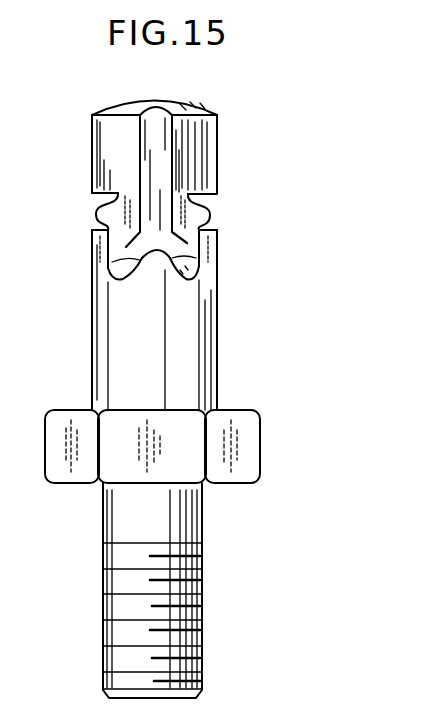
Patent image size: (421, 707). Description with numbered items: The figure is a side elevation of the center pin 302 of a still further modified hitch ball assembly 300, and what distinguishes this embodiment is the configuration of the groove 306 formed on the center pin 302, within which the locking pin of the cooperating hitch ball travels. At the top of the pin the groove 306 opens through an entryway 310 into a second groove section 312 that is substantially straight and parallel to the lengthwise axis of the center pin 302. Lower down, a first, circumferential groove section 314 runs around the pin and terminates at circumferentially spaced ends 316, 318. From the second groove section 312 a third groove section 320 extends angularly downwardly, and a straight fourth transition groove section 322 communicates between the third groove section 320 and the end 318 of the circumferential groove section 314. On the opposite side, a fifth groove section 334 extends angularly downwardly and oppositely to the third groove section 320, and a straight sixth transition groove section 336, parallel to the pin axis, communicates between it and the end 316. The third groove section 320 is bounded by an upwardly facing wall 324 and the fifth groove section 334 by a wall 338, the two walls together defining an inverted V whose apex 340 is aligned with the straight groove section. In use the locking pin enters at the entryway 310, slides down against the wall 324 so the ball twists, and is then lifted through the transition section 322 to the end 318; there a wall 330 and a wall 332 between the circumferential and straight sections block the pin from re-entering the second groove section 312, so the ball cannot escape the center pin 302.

The hitch ball assembly 300 is at (327, 272).
The center pin 302 is at (190, 371).
The groove 306 is at (157, 166).
The entryway 310 is at (161, 94).
The second groove section 312 is at (141, 141).
The first circumferential groove section 314 is at (209, 212).
The end of circumferential groove section 316 is at (207, 192).
The end of circumferential groove section 318 is at (114, 184).
The third groove section 320 is at (122, 267).
The fourth transition groove section 322 is at (113, 243).
The upwardly facing wall 324 is at (118, 272).
The wall 330 is at (102, 212).
The wall 332 is at (181, 188).
The fifth groove section 334 is at (190, 266).
The sixth transition groove section 336 is at (201, 244).
The wall 338 is at (189, 279).
The apex 340 is at (150, 278).